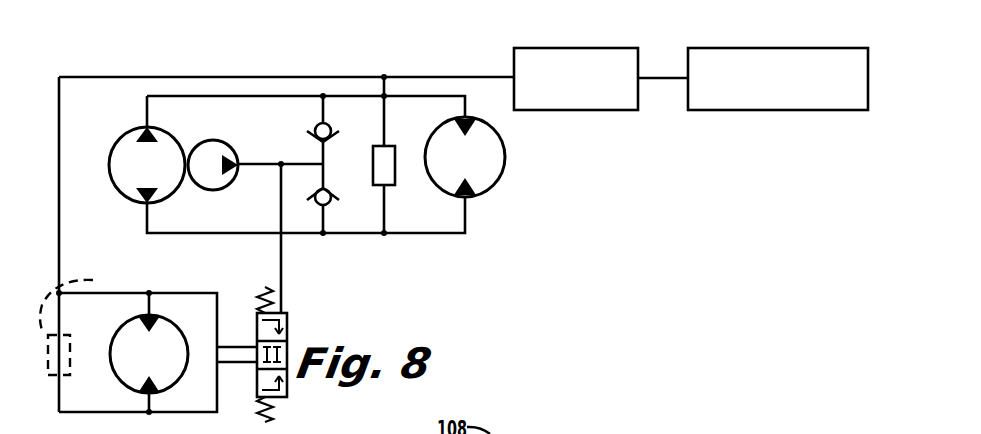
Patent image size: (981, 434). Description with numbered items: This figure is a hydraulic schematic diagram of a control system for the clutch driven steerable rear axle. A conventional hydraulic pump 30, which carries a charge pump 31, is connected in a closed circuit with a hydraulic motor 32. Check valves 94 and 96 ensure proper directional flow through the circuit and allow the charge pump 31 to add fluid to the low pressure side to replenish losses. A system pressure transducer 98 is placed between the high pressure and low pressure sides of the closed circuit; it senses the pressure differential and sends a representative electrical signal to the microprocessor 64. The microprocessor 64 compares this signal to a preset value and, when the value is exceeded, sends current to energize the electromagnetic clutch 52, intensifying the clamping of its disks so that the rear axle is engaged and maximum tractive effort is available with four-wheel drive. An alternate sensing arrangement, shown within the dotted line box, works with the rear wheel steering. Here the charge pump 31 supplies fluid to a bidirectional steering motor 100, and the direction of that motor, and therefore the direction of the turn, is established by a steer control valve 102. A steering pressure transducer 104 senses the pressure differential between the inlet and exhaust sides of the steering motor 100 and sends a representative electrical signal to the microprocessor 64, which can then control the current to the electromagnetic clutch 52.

The hydraulic pump 30 is at (163, 138).
The charge pump 31 is at (218, 141).
The hydraulic motor 32 is at (478, 189).
The check valve 94 is at (315, 125).
The check valve 96 is at (325, 205).
The system pressure transducer 98 is at (386, 186).
The microprocessor 64 is at (567, 48).
The electromagnetic clutch 52 is at (802, 48).
The steering motor 100 is at (136, 310).
The steer control valve 102 is at (287, 318).
The steering pressure transducer 104 is at (88, 281).